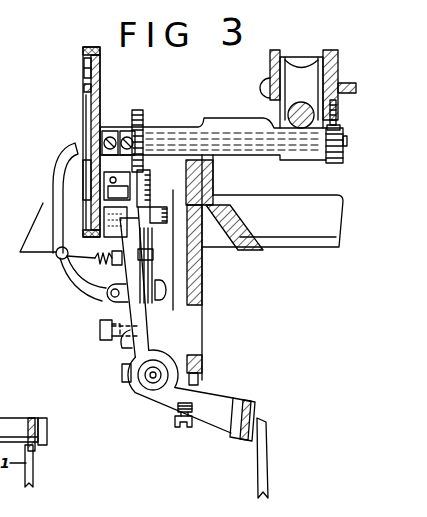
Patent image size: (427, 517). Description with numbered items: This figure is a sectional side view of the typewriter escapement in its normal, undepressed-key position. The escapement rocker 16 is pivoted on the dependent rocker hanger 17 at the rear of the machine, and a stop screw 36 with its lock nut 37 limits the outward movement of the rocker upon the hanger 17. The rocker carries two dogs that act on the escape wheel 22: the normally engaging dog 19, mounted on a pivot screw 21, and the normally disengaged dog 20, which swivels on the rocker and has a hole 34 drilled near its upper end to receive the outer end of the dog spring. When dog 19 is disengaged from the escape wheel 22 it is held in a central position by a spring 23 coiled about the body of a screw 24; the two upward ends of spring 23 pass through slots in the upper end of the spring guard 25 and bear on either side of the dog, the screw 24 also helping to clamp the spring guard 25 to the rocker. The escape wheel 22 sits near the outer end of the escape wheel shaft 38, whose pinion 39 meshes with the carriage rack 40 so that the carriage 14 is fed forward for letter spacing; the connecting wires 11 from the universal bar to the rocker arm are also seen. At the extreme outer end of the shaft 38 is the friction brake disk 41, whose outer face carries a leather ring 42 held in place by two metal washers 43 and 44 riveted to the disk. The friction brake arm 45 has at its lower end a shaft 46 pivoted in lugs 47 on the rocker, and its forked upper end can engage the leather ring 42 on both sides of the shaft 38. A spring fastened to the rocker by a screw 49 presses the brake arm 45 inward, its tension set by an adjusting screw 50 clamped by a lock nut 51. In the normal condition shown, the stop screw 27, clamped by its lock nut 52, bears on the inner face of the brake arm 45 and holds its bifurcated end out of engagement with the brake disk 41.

The connecting wires 11 is at (267, 460).
The carriage 14 is at (332, 50).
The escapement rocker 16 is at (128, 372).
The rocker hanger 17 is at (203, 299).
The normally engaging dog 19 is at (140, 185).
The normally disengaged dog 20 is at (108, 190).
The pivot screw 21 is at (213, 194).
The escape wheel 22 is at (142, 111).
The spring 23 is at (157, 270).
The screw 24 is at (165, 292).
The spring guard 25 is at (158, 250).
The stop screw 27 is at (96, 262).
The hole 34 is at (100, 145).
The stop screw 36 is at (184, 428).
The lock nut 37 is at (178, 406).
The escape wheel shaft 38 is at (347, 142).
The pinion 39 is at (330, 161).
The carriage rack 40 is at (341, 118).
The friction brake disk 41 is at (100, 62).
The leather ring 42 is at (84, 63).
The metal washer 43 is at (83, 50).
The metal washer 44 is at (84, 89).
The friction brake arm 45 is at (56, 210).
The shaft 46 is at (60, 259).
The lugs 47 is at (105, 300).
The screw 49 is at (128, 384).
The adjusting screw 50 is at (100, 330).
The lock nut 51 is at (123, 340).
The lock nut 52 is at (138, 256).